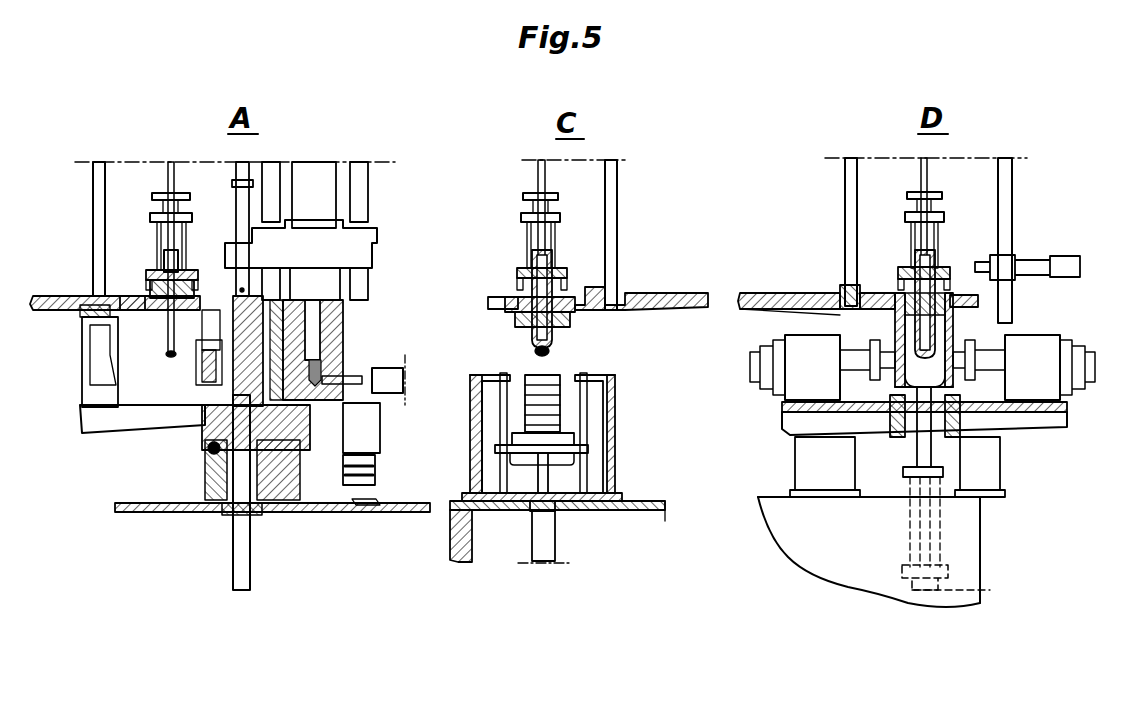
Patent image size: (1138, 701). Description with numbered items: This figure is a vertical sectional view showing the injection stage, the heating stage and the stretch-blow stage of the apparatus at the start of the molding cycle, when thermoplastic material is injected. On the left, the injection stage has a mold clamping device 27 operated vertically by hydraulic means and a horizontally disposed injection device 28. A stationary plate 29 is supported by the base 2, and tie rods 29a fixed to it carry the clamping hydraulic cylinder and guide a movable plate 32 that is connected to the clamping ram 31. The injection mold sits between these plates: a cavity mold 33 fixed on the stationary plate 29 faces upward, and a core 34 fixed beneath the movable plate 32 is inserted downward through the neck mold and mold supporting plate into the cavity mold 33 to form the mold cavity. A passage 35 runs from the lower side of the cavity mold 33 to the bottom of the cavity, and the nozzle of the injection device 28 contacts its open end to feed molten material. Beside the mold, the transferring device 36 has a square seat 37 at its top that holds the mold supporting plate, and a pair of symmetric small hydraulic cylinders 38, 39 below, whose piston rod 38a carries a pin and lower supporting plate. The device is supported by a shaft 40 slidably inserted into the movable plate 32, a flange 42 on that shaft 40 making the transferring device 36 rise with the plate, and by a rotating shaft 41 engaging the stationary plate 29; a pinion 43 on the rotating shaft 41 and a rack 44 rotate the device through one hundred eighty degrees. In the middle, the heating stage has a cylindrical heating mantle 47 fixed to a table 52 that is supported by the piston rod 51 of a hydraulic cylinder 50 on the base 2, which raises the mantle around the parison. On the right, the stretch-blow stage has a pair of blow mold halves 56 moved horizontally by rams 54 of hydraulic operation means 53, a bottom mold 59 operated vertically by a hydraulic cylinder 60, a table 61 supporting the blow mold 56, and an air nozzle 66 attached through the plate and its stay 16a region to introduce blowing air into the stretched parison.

The base 2 is at (140, 513).
The stay 16a is at (550, 252).
The mold clamping device 27 is at (386, 232).
The injection device 28 is at (394, 376).
The stationary plate 29 is at (96, 430).
The tie rods 29a is at (358, 183).
The clamping ram 31 is at (318, 181).
The movable plate 32 is at (366, 253).
The cavity mold 33 is at (346, 440).
The core 34 is at (318, 324).
The passage 35 is at (332, 390).
The transferring device 36 is at (202, 446).
The seat 37 is at (220, 294).
The hydraulic cylinder 38 is at (202, 380).
The piston rod 38a is at (212, 330).
The hydraulic cylinder 39 is at (294, 396).
The shaft 40 is at (248, 170).
The rotating shaft 41 is at (252, 560).
The flange 42 is at (232, 184).
The pinion 43 is at (217, 516).
The rack 44 is at (200, 470).
The heating mantle 47 is at (560, 400).
The hydraulic cylinder 50 is at (552, 545).
The piston rod 51 is at (558, 478).
The table 52 is at (580, 447).
The hydraulic operation means 53 is at (792, 370).
The rams 54 is at (862, 402).
The blow mold 56 is at (904, 430).
The bottom mold 59 is at (942, 426).
The hydraulic cylinder 60 is at (892, 552).
The table 61 is at (1030, 438).
The air nozzle 66 is at (982, 256).